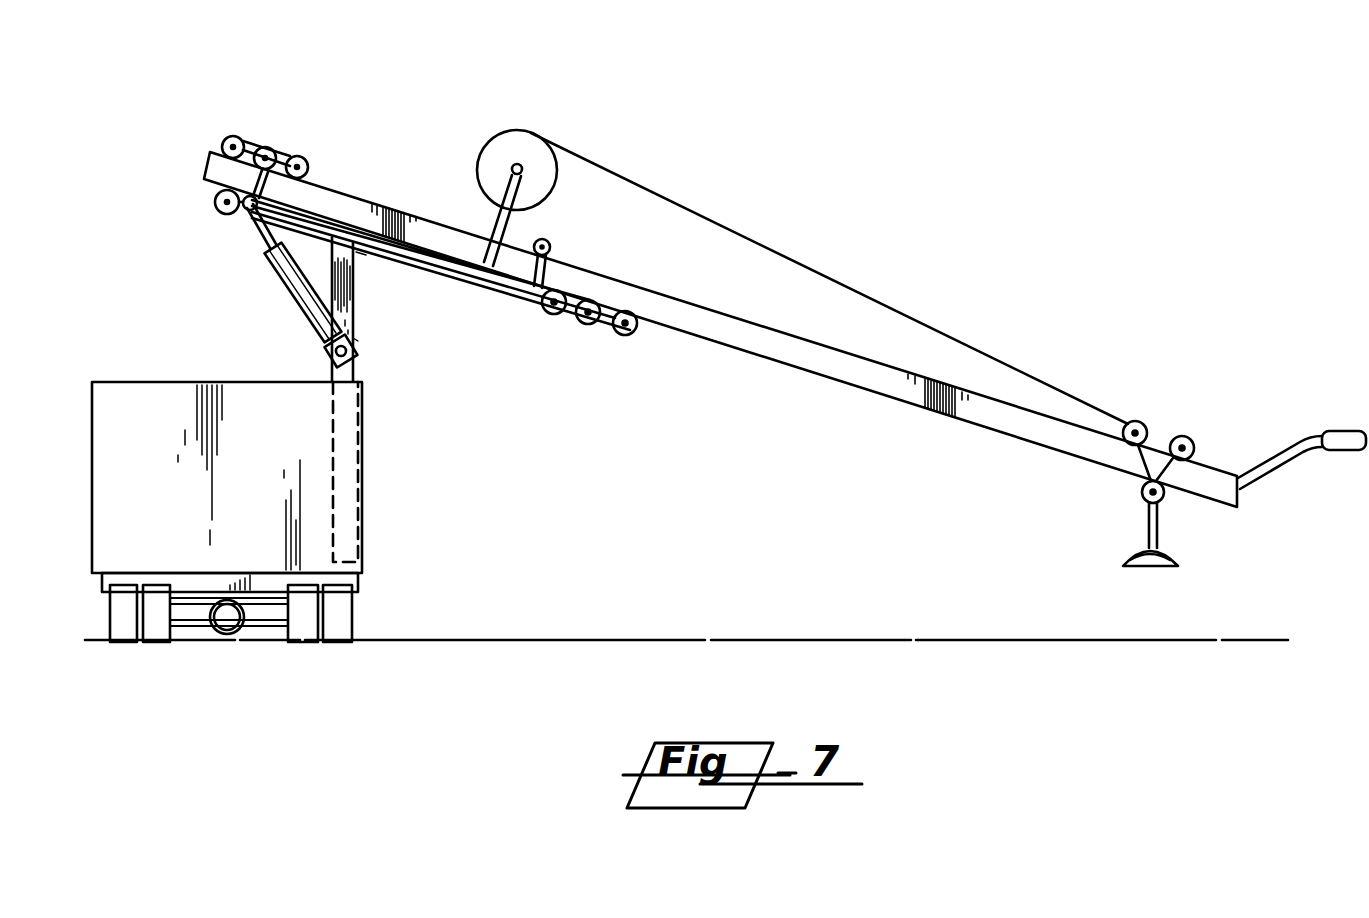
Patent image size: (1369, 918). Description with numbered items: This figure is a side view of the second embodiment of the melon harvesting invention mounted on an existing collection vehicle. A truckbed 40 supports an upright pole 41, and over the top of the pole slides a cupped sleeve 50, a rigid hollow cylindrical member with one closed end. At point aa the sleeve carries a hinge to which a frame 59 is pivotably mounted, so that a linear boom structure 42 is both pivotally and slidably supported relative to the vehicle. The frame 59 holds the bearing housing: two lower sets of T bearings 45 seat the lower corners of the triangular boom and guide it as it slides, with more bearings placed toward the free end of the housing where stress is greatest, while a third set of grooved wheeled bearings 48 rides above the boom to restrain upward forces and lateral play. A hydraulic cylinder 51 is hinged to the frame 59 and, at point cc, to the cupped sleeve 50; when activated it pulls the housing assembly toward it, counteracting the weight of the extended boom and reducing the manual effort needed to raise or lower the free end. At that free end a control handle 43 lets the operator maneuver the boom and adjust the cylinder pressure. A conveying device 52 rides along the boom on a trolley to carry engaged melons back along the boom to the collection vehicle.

The truckbed 40 is at (143, 420).
The upright pole 41 is at (358, 492).
The linear boom structure 42 is at (847, 383).
The control handle 43 is at (1337, 432).
The lower sets of T bearings 45 is at (578, 330).
The third set of bearings 48 is at (267, 147).
The cupped sleeve 50 is at (355, 302).
The hydraulic cylinder 51 is at (283, 287).
The conveying device 52 is at (1141, 487).
The frame 59 is at (313, 212).
The pivotable and slidable mount point aa is at (360, 255).
The hinge point on sleeve cc is at (357, 340).